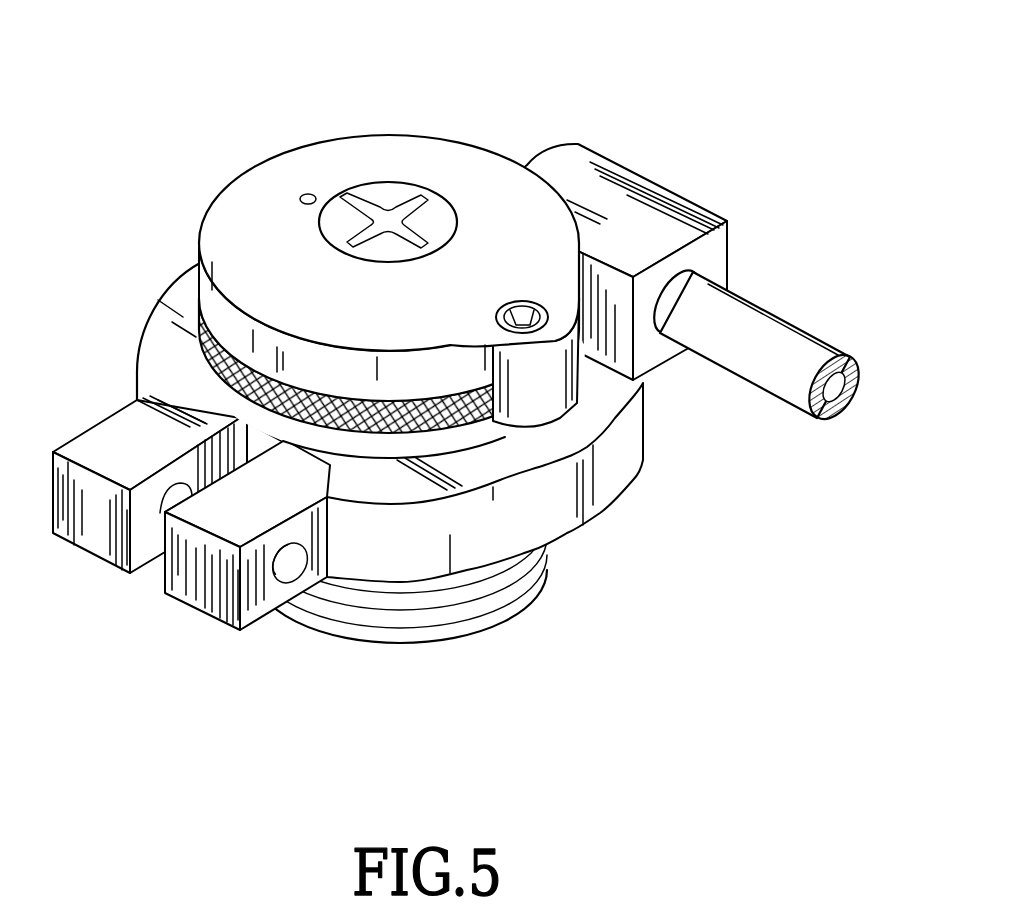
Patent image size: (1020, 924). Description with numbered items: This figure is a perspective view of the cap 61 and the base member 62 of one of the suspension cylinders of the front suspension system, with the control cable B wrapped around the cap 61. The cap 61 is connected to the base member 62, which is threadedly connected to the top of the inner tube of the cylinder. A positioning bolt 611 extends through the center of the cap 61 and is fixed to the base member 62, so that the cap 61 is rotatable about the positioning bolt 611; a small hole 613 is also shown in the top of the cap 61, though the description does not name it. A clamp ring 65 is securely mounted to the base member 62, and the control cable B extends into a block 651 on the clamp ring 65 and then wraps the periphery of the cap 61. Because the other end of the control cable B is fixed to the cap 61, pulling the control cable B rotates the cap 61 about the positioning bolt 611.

The cap 61 is at (354, 222).
The positioning bolt 611 is at (383, 190).
The hole 613 is at (307, 194).
The base member 62 is at (411, 648).
The clamp ring 65 is at (163, 325).
The block 651 is at (673, 195).
The control cable B is at (813, 330).